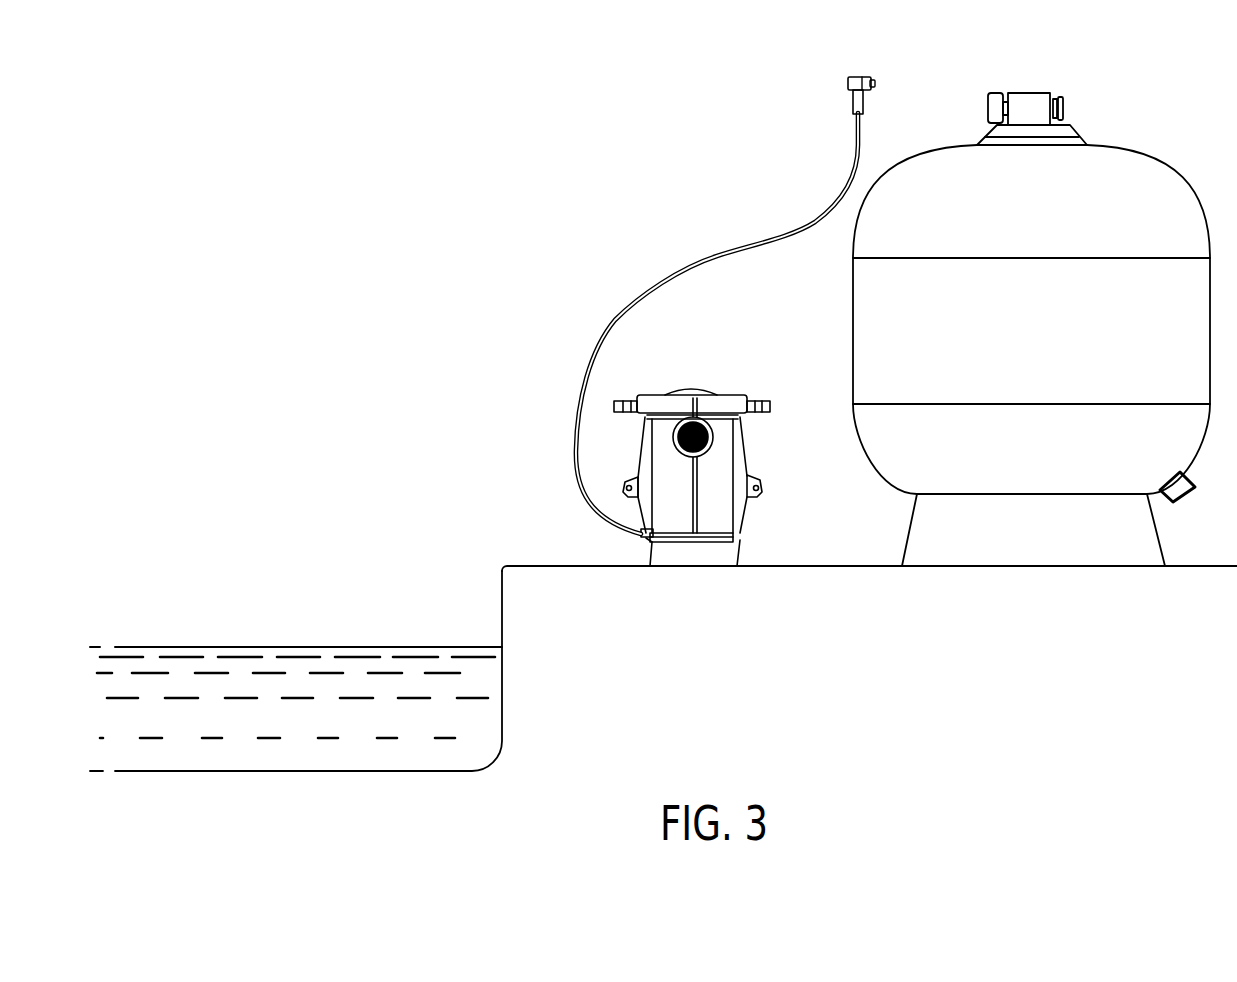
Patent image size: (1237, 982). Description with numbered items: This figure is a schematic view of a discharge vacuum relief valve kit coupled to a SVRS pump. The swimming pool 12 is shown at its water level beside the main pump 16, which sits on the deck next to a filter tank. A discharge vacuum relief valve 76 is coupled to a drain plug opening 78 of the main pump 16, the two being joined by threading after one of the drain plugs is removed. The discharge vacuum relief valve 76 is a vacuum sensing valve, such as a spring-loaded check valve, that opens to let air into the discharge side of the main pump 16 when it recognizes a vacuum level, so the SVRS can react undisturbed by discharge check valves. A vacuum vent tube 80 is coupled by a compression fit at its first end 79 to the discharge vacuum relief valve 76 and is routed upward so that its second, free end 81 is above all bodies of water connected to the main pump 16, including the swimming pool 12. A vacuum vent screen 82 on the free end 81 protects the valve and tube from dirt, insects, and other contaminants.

The swimming pool 12 is at (290, 725).
The main pump 16 is at (700, 550).
The discharge vacuum relief valve 76 is at (641, 535).
The drain plug opening 78 is at (645, 540).
The first end 79 is at (626, 514).
The vacuum vent tube 80 is at (715, 252).
The free end 81 is at (838, 103).
The vacuum vent screen 82 is at (871, 82).